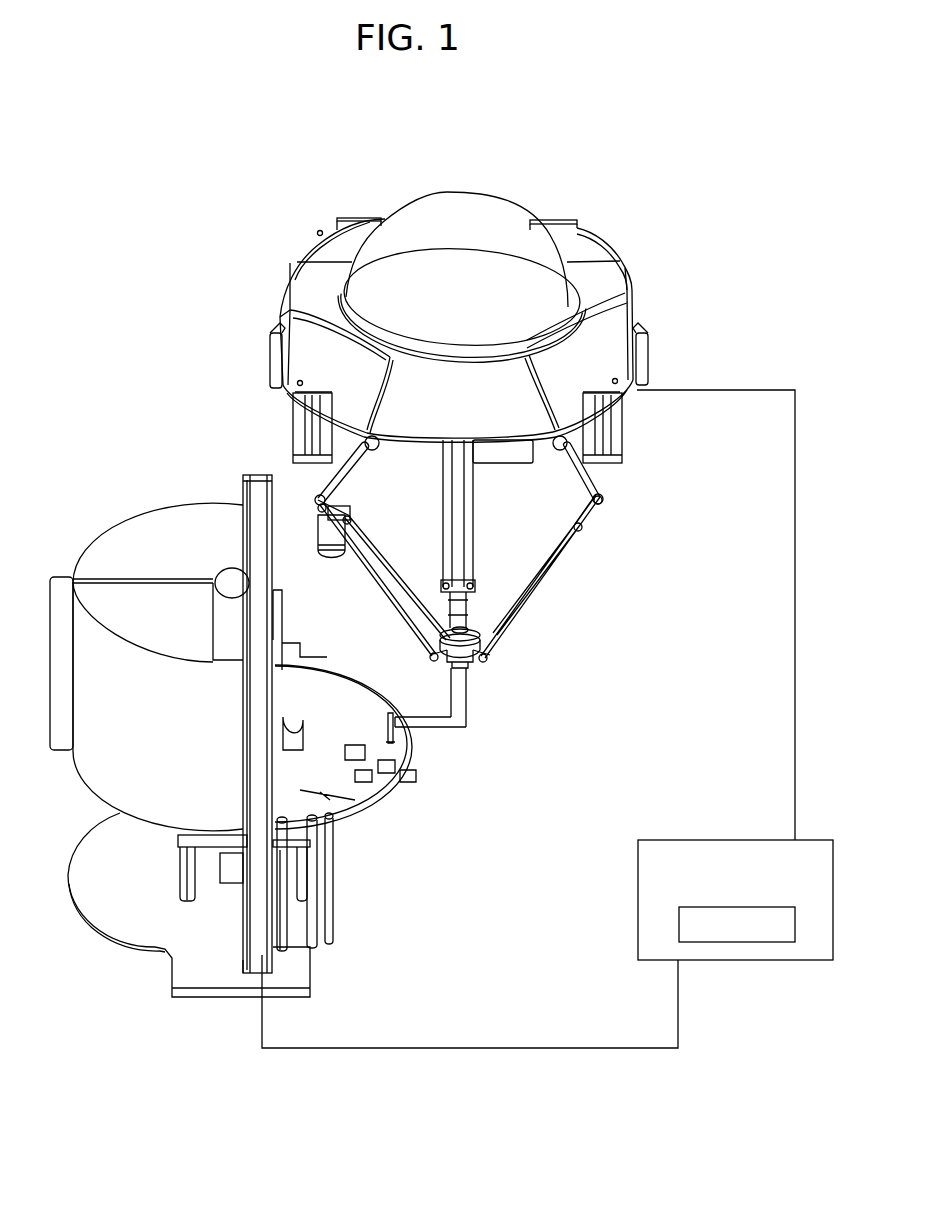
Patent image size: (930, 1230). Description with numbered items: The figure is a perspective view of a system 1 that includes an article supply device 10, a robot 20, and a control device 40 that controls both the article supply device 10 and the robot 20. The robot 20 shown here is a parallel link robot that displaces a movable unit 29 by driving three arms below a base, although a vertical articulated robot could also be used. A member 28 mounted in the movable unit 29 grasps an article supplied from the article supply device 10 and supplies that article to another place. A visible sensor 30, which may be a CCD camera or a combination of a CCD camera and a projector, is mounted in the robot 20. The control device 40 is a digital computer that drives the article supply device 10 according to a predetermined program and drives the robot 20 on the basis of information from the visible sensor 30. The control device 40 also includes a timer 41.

The system 1 is at (210, 211).
The article supply device 10 is at (132, 482).
The robot 20 is at (473, 210).
The member 28 is at (397, 735).
The movable unit 29 is at (477, 630).
The visible sensor 30 is at (333, 563).
The control device 40 is at (815, 960).
The timer 41 is at (737, 942).